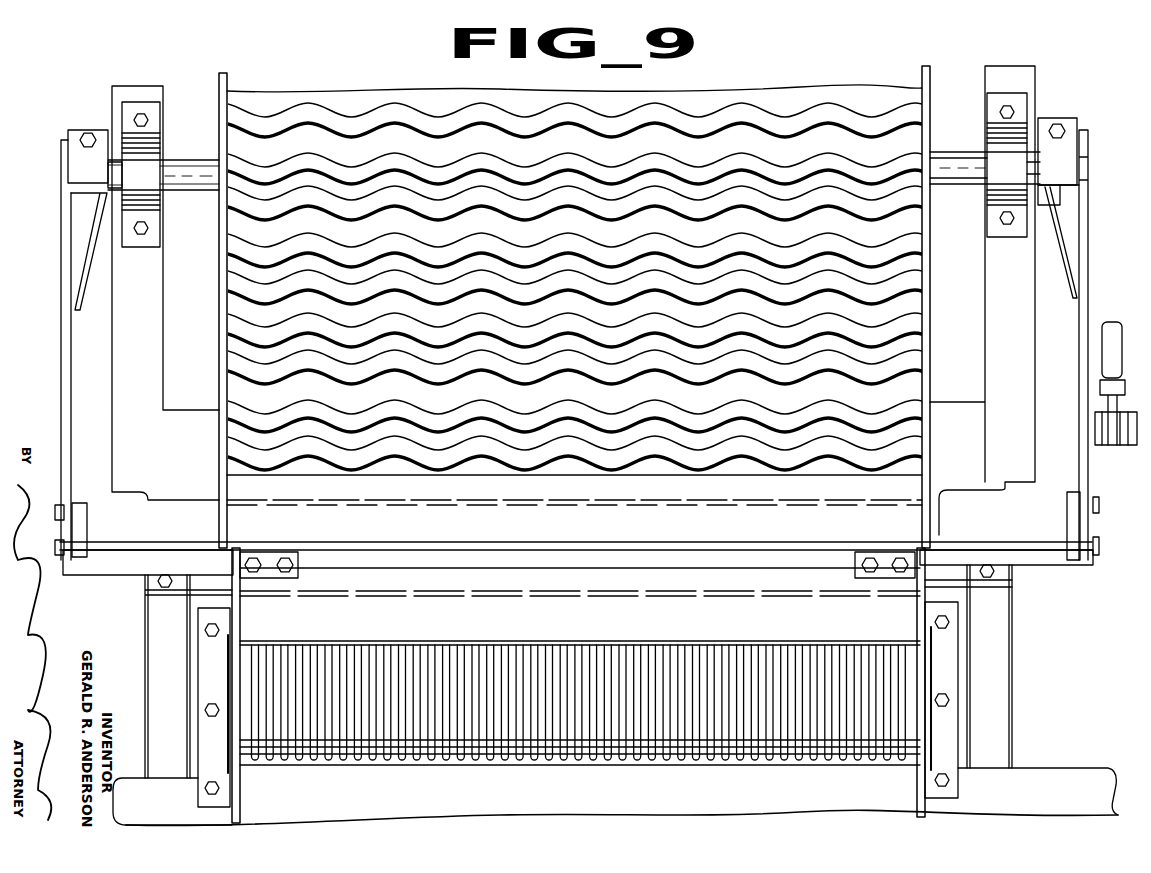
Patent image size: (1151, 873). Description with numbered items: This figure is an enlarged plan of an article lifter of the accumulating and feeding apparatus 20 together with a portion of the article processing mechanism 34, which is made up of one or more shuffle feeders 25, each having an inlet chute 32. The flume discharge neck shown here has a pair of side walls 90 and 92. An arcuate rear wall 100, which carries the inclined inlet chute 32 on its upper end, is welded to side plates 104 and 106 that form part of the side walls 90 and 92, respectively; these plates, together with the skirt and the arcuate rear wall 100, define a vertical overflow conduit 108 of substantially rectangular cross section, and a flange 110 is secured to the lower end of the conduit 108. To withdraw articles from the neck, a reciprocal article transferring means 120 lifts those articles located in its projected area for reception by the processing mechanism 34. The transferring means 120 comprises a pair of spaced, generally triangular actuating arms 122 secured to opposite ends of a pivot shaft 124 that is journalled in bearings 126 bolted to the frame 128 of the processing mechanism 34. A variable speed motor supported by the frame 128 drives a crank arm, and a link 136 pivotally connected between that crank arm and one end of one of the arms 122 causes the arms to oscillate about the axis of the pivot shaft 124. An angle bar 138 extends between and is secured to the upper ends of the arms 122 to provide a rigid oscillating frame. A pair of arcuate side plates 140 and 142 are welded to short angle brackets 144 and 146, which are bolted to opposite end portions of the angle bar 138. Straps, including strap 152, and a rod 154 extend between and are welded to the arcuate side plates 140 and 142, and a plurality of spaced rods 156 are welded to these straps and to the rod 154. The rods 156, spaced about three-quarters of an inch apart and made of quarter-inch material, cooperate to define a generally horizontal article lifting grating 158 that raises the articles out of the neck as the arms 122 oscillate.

The accumulating and feeding apparatus 20 is at (1052, 648).
The shuffle feeder 25 is at (240, 287).
The inlet chute 32 is at (567, 531).
The article processing mechanism 34 is at (245, 342).
The side wall 90 is at (238, 798).
The side wall 92 is at (918, 787).
The arcuate rear wall 100 is at (742, 627).
The side plate 104 is at (234, 612).
The side plate 106 is at (928, 597).
The vertical overflow conduit 108 is at (932, 663).
The flange 110 is at (1004, 697).
The reciprocal article transferring means 120 is at (600, 673).
The actuating arm 122 is at (62, 336).
The pivot shaft 124 is at (201, 180).
The bearing 126 is at (153, 153).
The frame 128 is at (1027, 300).
The link 136 is at (1110, 333).
The angle bar 138 is at (473, 562).
The arcuate side plate 140 is at (234, 630).
The arcuate side plate 142 is at (917, 621).
The angle bracket 144 is at (293, 577).
The angle bracket 146 is at (862, 562).
The strap 152 is at (585, 645).
The rod 154 is at (427, 757).
The spaced rod 156 is at (405, 657).
The article lifting grating 158 is at (462, 660).